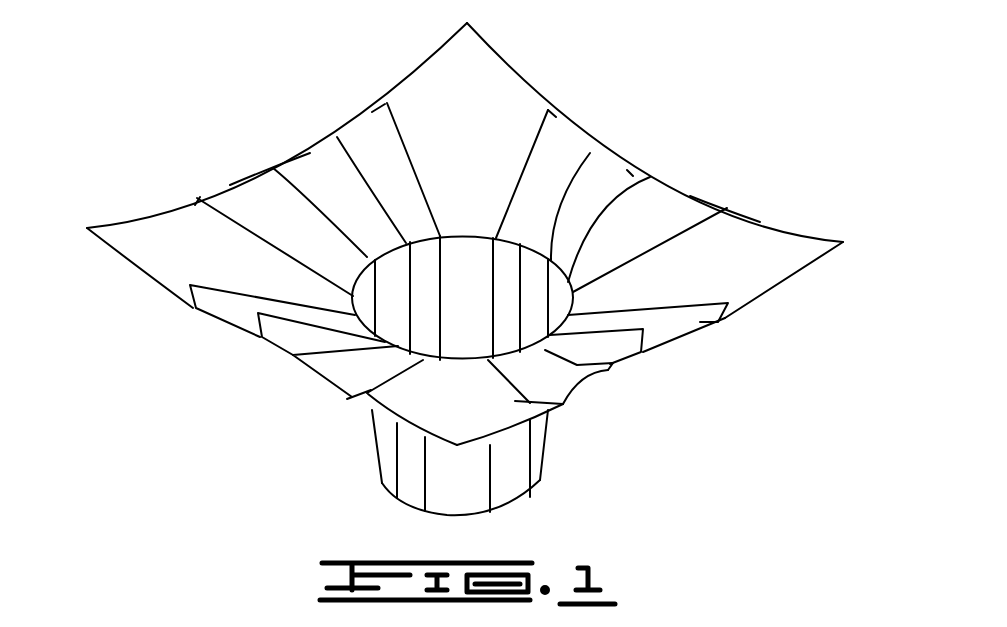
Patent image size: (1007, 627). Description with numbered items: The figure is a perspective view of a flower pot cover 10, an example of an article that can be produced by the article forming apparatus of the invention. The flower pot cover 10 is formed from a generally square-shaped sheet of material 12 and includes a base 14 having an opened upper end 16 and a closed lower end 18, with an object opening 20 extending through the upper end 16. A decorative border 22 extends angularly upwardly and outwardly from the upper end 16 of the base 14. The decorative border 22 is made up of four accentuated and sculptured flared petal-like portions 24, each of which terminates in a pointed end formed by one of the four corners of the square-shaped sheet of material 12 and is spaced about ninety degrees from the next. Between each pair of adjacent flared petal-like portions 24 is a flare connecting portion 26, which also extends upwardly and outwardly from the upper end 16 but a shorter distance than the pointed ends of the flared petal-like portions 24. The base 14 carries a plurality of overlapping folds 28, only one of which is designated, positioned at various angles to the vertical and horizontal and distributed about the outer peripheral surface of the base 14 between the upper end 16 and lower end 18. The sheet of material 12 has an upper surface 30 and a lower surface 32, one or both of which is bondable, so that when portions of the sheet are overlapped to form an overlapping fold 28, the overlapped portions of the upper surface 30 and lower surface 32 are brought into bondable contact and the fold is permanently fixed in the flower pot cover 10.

The flower pot cover 10 is at (697, 193).
The sheet of material 12 is at (322, 373).
The base 14 is at (550, 440).
The opened upper end 16 is at (463, 235).
The closed lower end 18 is at (412, 505).
The object opening 20 is at (518, 252).
The decorative border 22 is at (240, 180).
The flared petal-like portions 24 is at (474, 80).
The flare connecting portion 26 is at (310, 153).
The overlapping folds 28 is at (492, 487).
The upper surface 30 is at (747, 230).
The lower surface 32 is at (692, 322).